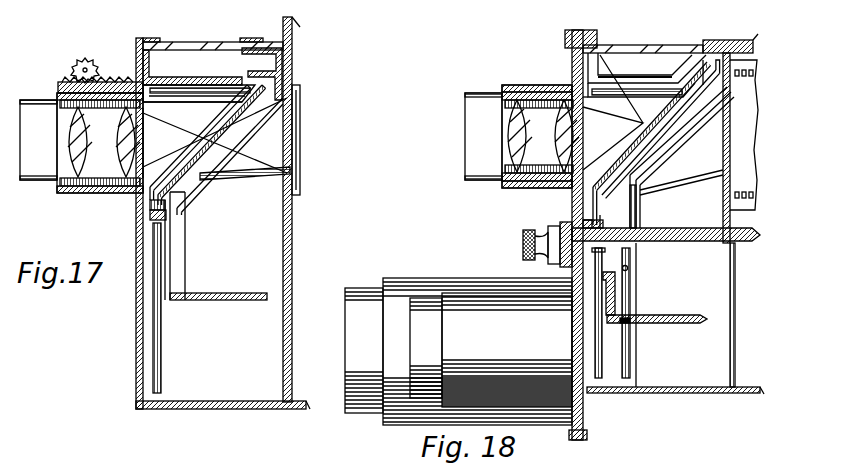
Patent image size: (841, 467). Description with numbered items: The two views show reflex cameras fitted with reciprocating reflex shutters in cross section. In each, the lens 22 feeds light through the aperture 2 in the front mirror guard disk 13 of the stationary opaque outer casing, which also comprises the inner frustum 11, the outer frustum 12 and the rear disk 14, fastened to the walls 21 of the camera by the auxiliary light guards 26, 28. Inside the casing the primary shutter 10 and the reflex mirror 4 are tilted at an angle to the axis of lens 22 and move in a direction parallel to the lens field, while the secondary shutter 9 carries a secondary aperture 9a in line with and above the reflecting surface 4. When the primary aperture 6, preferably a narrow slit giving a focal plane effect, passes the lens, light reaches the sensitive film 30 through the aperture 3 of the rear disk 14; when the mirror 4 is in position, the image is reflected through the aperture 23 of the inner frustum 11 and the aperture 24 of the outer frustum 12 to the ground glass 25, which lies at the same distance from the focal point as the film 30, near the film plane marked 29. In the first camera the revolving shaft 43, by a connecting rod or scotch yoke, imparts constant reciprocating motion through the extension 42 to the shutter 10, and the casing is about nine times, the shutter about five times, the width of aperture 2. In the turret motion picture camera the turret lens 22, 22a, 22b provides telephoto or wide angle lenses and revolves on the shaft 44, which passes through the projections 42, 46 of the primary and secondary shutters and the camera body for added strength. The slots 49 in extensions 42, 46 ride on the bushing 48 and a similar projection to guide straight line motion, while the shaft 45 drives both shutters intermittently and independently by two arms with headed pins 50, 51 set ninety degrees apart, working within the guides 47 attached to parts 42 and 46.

In FIG. 17, the aperture 2 is at (229, 111).
In FIG. 18, the aperture 2 is at (658, 135).
In FIG. 17, the aperture 3 is at (202, 146).
In FIG. 18, the aperture 3 is at (655, 150).
In FIG. 18, the reflex mirror 4 is at (690, 106).
In FIG. 17, the primary aperture 6 is at (222, 126).
In FIG. 17, the secondary shutter 9 is at (222, 88).
In FIG. 18, the secondary aperture 9a is at (668, 74).
In FIG. 18, the primary shutter 10 is at (680, 115).
In FIG. 17, the inner frustum 11 is at (155, 100).
In FIG. 18, the inner frustum 11 is at (596, 97).
In FIG. 17, the outer frustum 12 is at (262, 72).
In FIG. 18, the outer frustum 12 is at (642, 53).
In FIG. 17, the front mirror guard disk 13 is at (155, 172).
In FIG. 18, the front mirror guard disk 13 is at (600, 168).
In FIG. 17, the rear disk 14 is at (180, 186).
In FIG. 18, the rear disk 14 is at (638, 180).
In FIG. 17, the walls 21 is at (277, 43).
In FIG. 18, the walls 21 is at (728, 41).
In FIG. 17, the lens 22 is at (81, 125).
In FIG. 18, the lens 22 is at (522, 136).
In FIG. 18, the turret lens 22a is at (458, 351).
In FIG. 18, the turret lens 22b is at (491, 350).
In FIG. 17, the aperture 23 is at (203, 98).
In FIG. 18, the aperture 23 is at (660, 97).
In FIG. 17, the aperture 24 is at (183, 85).
In FIG. 18, the aperture 24 is at (618, 83).
In FIG. 17, the ground glass 25 is at (198, 43).
In FIG. 18, the ground glass 25 is at (678, 45).
In FIG. 17, the auxiliary light guard 26 is at (160, 46).
In FIG. 17, the auxiliary light guard 28 is at (260, 178).
In FIG. 17, the film plane 29 is at (293, 155).
In FIG. 17, the sensitive film 30 is at (299, 132).
In FIG. 18, the sensitive film 30 is at (744, 135).
In FIG. 17, the extension 42 is at (152, 240).
In FIG. 18, the extension 42 is at (600, 380).
In FIG. 17, the revolving shaft 43 is at (229, 295).
In FIG. 18, the shaft 44 is at (676, 234).
In FIG. 18, the shaft 45 is at (660, 303).
In FIG. 18, the extension 46 is at (635, 362).
In FIG. 18, the guides 47 is at (630, 280).
In FIG. 18, the bushing 48 is at (565, 222).
In FIG. 18, the slots 49 is at (596, 228).
In FIG. 18, the headed pin 50 is at (628, 268).
In FIG. 18, the headed pin 51 is at (630, 320).